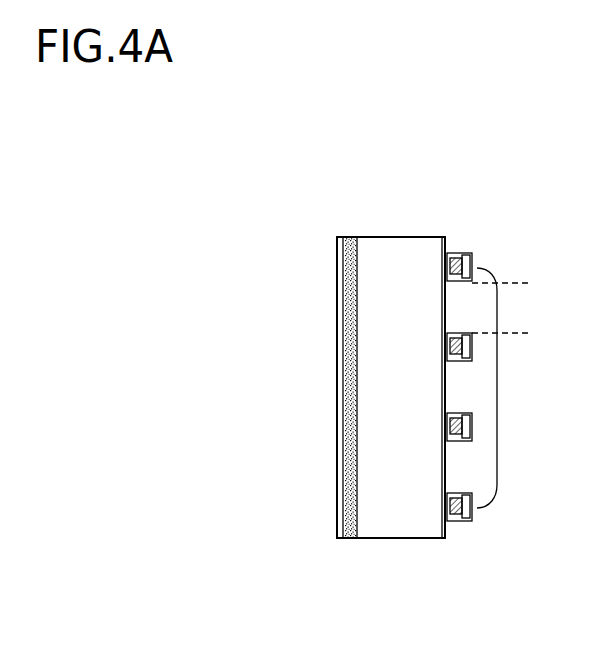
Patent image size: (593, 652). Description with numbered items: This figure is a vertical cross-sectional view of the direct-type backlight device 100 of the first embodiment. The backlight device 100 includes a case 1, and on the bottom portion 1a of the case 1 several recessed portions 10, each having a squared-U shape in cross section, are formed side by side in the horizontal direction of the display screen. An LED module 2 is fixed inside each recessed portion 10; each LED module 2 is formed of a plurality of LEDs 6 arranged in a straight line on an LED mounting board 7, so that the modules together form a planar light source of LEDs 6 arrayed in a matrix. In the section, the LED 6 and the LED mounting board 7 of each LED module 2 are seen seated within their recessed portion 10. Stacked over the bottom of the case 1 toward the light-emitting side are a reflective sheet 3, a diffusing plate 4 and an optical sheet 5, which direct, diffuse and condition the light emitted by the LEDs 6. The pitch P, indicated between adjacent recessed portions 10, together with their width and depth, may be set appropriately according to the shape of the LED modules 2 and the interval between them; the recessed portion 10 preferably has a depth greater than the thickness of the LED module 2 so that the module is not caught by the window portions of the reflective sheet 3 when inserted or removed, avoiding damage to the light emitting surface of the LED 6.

The backlight device 100 is at (316, 292).
The case 1 is at (399, 237).
The bottom portion of the case 1a is at (448, 521).
The LED module 2 is at (499, 180).
The reflective sheet 3 is at (443, 500).
The diffusing plate 4 is at (350, 443).
The optical sheet 5 is at (336, 498).
The LED 6 is at (455, 257).
The LED mounting board 7 is at (467, 254).
The recessed portion 10 is at (477, 345).
The pitch P is at (518, 284).